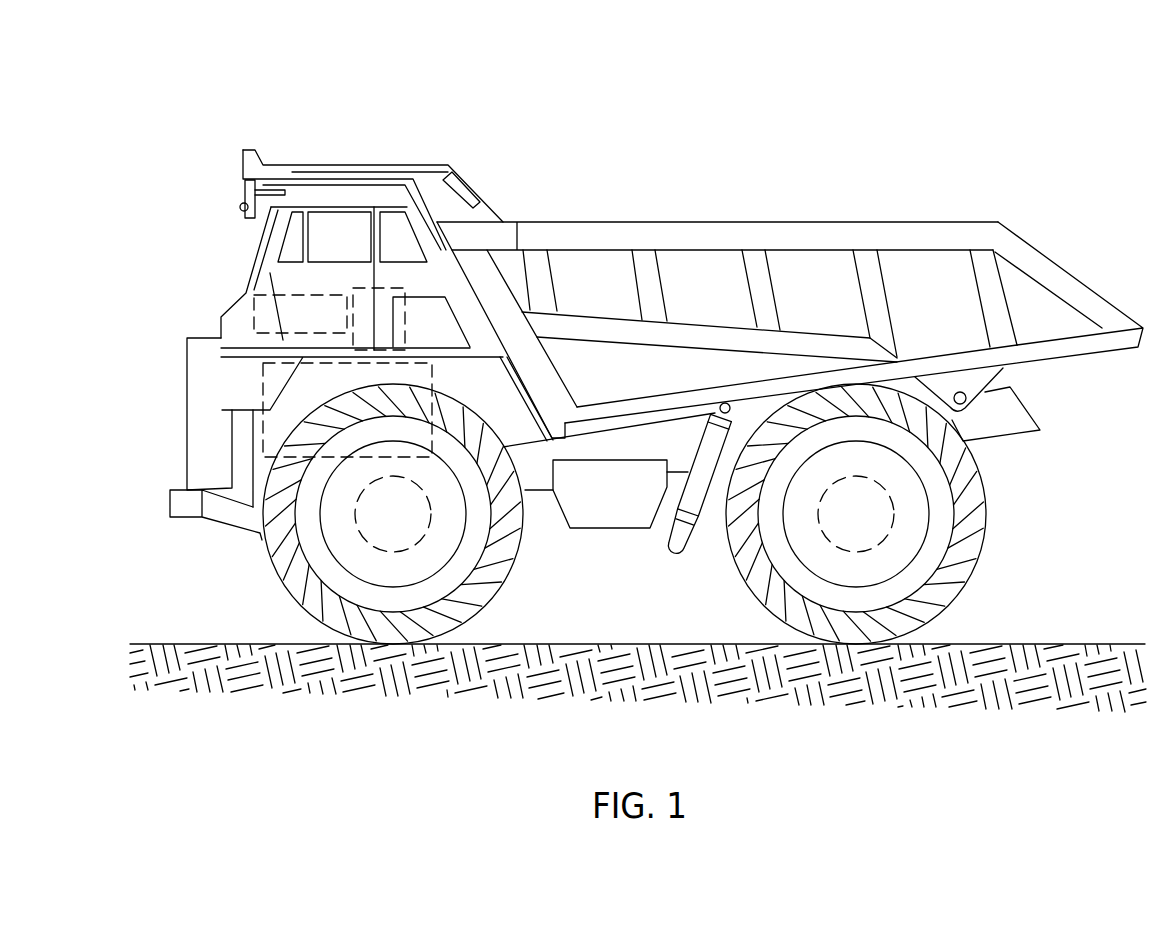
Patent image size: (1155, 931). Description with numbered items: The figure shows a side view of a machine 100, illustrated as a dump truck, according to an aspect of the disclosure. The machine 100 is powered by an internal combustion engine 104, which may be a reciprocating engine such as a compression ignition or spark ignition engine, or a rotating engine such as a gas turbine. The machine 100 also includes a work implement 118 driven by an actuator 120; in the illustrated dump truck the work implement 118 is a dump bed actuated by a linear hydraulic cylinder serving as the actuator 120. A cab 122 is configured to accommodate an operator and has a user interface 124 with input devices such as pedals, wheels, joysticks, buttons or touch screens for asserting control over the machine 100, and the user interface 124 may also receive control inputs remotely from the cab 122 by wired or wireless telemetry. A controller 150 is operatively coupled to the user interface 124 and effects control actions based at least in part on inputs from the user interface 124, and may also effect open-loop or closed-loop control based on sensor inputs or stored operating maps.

The machine 100 is at (629, 347).
The internal combustion engine 104 is at (263, 397).
The work implement 118 is at (930, 222).
The actuator 120 is at (700, 487).
The cab 122 is at (181, 208).
The user interface 124 is at (252, 296).
The controller 150 is at (379, 288).